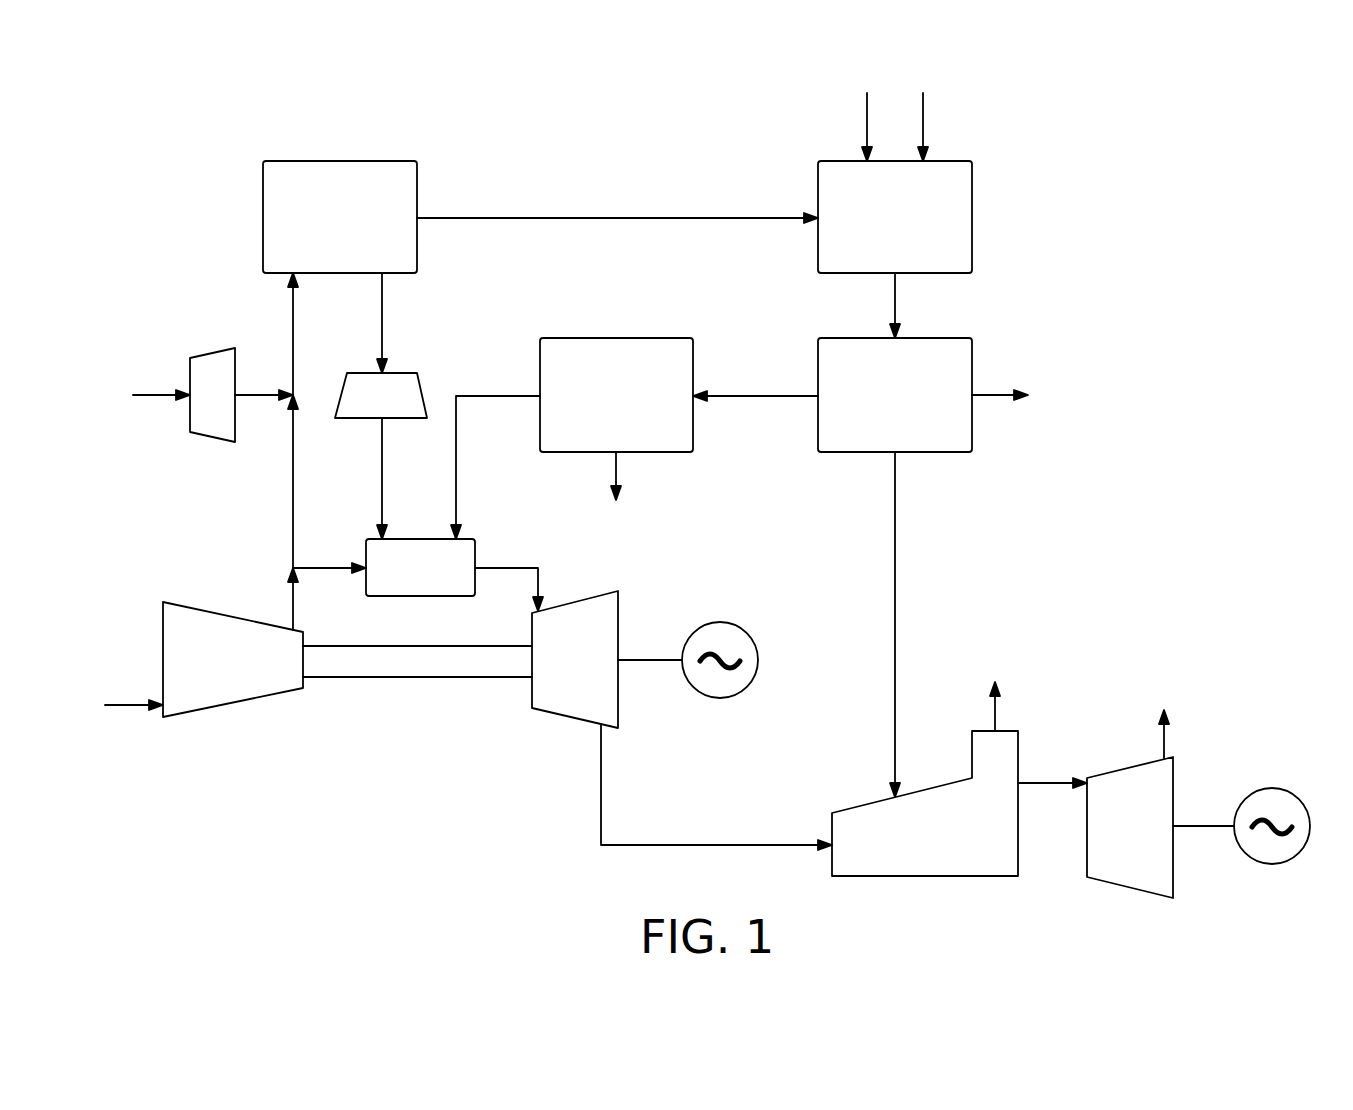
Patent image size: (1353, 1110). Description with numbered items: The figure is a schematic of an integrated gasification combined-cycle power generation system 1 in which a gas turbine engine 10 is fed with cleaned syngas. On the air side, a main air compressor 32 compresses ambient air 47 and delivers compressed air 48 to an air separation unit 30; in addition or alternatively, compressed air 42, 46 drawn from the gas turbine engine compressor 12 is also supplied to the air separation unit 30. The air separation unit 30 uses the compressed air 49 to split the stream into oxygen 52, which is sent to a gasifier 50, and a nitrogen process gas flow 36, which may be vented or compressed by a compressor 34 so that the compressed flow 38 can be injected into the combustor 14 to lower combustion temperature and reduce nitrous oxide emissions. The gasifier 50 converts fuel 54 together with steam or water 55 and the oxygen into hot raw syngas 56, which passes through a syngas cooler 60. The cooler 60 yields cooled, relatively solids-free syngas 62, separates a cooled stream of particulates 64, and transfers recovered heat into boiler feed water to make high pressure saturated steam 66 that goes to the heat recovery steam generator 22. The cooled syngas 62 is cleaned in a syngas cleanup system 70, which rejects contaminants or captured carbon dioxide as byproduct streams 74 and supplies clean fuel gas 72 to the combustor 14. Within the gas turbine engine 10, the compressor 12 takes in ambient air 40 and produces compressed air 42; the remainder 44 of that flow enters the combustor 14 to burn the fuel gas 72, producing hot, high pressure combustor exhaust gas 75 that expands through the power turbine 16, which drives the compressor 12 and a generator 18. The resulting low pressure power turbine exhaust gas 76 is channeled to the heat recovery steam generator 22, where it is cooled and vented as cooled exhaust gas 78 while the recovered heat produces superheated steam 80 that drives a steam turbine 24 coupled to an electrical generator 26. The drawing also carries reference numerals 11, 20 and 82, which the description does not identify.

The integrated gasification combined-cycle power generation system 1 is at (192, 162).
The gas turbine engine 10 is at (362, 737).
The fuel supply system 11 is at (200, 566).
The gas turbine engine compressor 12 is at (210, 674).
The gas turbine engine combustor 14 is at (405, 582).
The power turbine 16 is at (558, 672).
The generator 18 is at (722, 623).
The steam turbine system 20 is at (1128, 637).
The heat recovery steam generator 22 is at (913, 852).
The steam turbine 24 is at (1115, 842).
The electrical generator 26 is at (1279, 789).
The air separation unit 30 is at (325, 240).
The main air compressor 32 is at (197, 410).
The compressor 34 is at (365, 409).
The nitrogen process gas flow 36 is at (382, 300).
The compressed nitrogen process gas flow 38 is at (382, 485).
The ambient air 40 is at (120, 704).
The compressed air 42 is at (294, 600).
The remainder of compressed air flow 44 is at (320, 568).
The compressed air 46 is at (292, 527).
The ambient air 47 is at (148, 394).
The compressed air 48 is at (248, 396).
The compressed air 49 is at (292, 323).
The gasifier 50 is at (880, 240).
The oxygen 52 is at (716, 217).
The fuel 54 is at (866, 110).
The steam or water 55 is at (924, 110).
The hot raw syngas 56 is at (895, 300).
The syngas cooler 60 is at (880, 409).
The cooled syngas 62 is at (758, 396).
The cooled stream of particulates 64 is at (987, 395).
The high pressure saturated steam 66 is at (895, 548).
The syngas cleanup system 70 is at (601, 409).
The clean fuel gas 72 is at (495, 396).
The byproduct streams 74 is at (616, 462).
The combustor exhaust gas 75 is at (505, 568).
The power turbine exhaust gas 76 is at (600, 783).
The cooled exhaust gas 78 is at (994, 718).
The superheated steam 80 is at (1038, 783).
The steam outlet 82 is at (1166, 745).